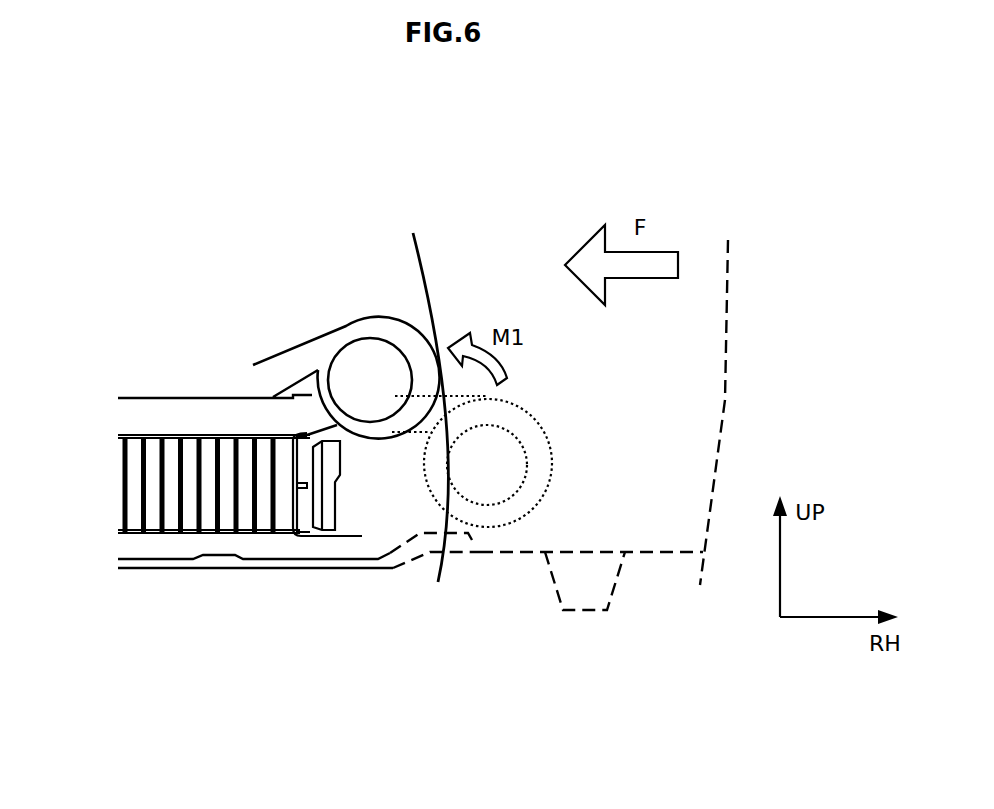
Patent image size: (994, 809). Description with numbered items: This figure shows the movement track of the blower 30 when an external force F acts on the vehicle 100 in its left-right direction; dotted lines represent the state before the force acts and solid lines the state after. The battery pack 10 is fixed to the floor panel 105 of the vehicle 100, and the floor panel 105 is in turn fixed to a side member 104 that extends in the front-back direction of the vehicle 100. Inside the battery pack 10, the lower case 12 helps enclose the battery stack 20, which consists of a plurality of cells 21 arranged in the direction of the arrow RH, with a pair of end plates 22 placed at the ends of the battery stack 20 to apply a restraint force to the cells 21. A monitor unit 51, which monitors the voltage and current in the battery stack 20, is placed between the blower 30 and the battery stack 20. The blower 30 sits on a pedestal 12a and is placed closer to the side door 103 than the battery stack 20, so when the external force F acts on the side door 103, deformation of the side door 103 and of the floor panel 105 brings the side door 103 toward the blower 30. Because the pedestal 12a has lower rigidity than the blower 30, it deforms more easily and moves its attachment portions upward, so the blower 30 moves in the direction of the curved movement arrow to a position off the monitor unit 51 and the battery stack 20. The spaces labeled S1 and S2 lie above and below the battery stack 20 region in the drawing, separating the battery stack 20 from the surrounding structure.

The battery pack 10 is at (127, 379).
The lower case 12 is at (213, 560).
The pedestal 12a is at (463, 533).
The battery stack 20 is at (133, 424).
The cell 21 is at (132, 477).
The end plate 22 is at (297, 508).
The blower 30 is at (363, 315).
The monitor unit 51 is at (333, 508).
The vehicle 100 is at (695, 637).
The side door 103 is at (420, 258).
The side member 104 is at (568, 612).
The floor panel 105 is at (268, 569).
The upper space S1 is at (197, 418).
The lower space S2 is at (176, 545).